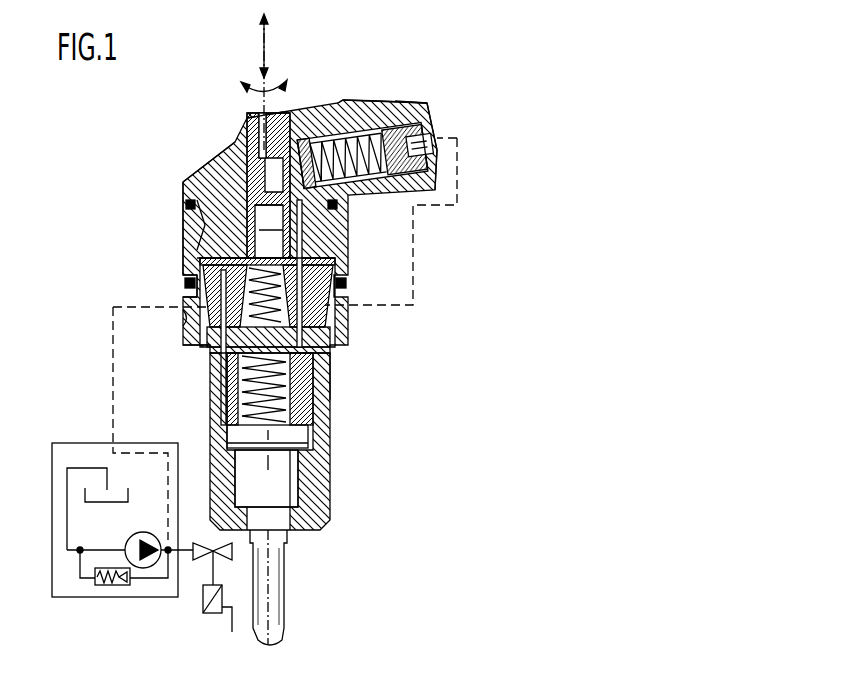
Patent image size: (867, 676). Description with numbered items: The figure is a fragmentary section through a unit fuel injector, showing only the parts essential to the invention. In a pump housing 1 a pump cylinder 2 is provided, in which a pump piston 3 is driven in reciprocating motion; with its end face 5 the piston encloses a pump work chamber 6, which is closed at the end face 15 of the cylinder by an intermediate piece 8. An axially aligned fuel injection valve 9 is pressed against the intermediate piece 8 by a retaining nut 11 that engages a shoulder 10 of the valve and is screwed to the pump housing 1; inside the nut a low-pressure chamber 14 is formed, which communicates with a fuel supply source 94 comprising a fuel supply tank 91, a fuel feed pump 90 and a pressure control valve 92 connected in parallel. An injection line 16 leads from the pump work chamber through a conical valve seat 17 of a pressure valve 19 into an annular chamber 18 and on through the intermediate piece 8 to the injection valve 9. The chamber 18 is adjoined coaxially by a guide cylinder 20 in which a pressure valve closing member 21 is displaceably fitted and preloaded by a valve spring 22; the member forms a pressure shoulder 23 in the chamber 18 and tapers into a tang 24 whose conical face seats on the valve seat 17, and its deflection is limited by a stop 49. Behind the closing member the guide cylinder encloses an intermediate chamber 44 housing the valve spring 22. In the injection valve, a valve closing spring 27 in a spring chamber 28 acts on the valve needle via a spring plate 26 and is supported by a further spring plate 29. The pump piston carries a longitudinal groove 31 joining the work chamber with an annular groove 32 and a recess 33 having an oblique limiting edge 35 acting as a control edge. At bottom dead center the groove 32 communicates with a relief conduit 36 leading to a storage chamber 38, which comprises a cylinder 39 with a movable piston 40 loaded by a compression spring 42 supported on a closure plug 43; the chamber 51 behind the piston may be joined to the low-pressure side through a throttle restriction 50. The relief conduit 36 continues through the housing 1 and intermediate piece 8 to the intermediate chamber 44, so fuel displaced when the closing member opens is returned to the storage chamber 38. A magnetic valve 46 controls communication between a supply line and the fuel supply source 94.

The pump housing 1 is at (213, 178).
The pump cylinder 2 is at (195, 175).
The pump piston 3 is at (285, 110).
The end face 5 is at (458, 218).
The pump work chamber 6 is at (238, 205).
The intermediate piece 8 is at (358, 272).
The fuel injection valve 9 is at (340, 397).
The shoulder 10 is at (283, 505).
The retaining nut 11 is at (333, 522).
The low-pressure chamber 14 is at (205, 300).
The end face 15 is at (193, 235).
The injection line 16 is at (203, 289).
The valve seat 17 is at (198, 267).
The annular chamber 18 is at (197, 283).
The pressure valve 19 is at (190, 284).
The guide cylinder 20 is at (200, 318).
The pressure valve closing member 21 is at (352, 312).
The valve spring 22 is at (345, 330).
The pressure shoulder 23 is at (350, 252).
The tang 24 is at (352, 233).
The spring plate 26 is at (268, 405).
The valve closing spring 27 is at (385, 370).
The spring chamber 28 is at (240, 400).
The spring plate 29 is at (225, 353).
The longitudinal groove 31 is at (256, 195).
The annular groove 32 is at (420, 186).
The recess 33 is at (305, 112).
The limiting edge 35 is at (263, 125).
The relief conduit 36 is at (362, 125).
The storage chamber 38 is at (315, 165).
The cylinder 39 is at (352, 102).
The piston 40 is at (340, 106).
The compression spring 42 is at (405, 110).
The closure plug 43 is at (437, 172).
The intermediate chamber 44 is at (220, 331).
The magnetic valve 46 is at (206, 603).
The stop 49 is at (348, 347).
The throttle restriction 50 is at (432, 110).
The chamber 51 is at (440, 145).
The fuel feed pump 90 is at (152, 533).
The fuel supply tank 91 is at (106, 497).
The pressure control valve 92 is at (122, 588).
The fuel supply source 94 is at (74, 588).